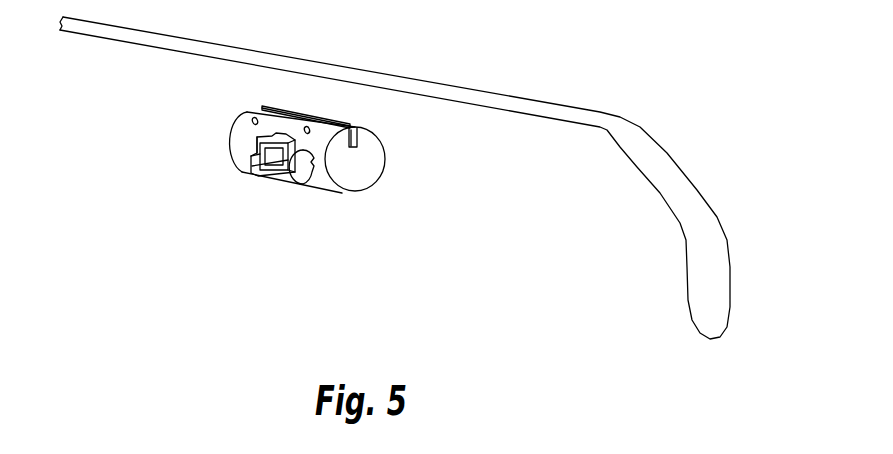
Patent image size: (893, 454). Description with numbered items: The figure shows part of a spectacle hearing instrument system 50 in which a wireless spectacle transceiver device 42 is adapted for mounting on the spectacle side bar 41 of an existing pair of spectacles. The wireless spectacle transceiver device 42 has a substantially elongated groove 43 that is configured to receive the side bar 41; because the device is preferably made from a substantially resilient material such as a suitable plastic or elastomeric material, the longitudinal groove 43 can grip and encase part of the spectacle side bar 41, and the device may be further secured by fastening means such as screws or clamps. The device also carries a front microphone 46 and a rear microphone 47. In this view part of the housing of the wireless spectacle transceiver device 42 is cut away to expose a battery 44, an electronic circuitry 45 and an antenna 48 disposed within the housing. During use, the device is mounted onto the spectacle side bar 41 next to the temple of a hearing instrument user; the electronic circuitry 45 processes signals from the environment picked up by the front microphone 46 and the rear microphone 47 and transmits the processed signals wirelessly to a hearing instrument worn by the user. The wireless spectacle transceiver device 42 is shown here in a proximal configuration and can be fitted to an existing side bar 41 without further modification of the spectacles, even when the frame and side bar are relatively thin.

The spectacle side bar 41 is at (499, 89).
The wireless spectacle transceiver device 42 is at (366, 191).
The substantially elongated groove 43 is at (353, 128).
The battery 44 is at (305, 180).
The electronic circuitry 45 is at (282, 172).
The front microphone 46 is at (253, 118).
The rear microphone 47 is at (306, 128).
The antenna 48 is at (263, 175).
The spectacle hearing instrument system 50 is at (315, 218).